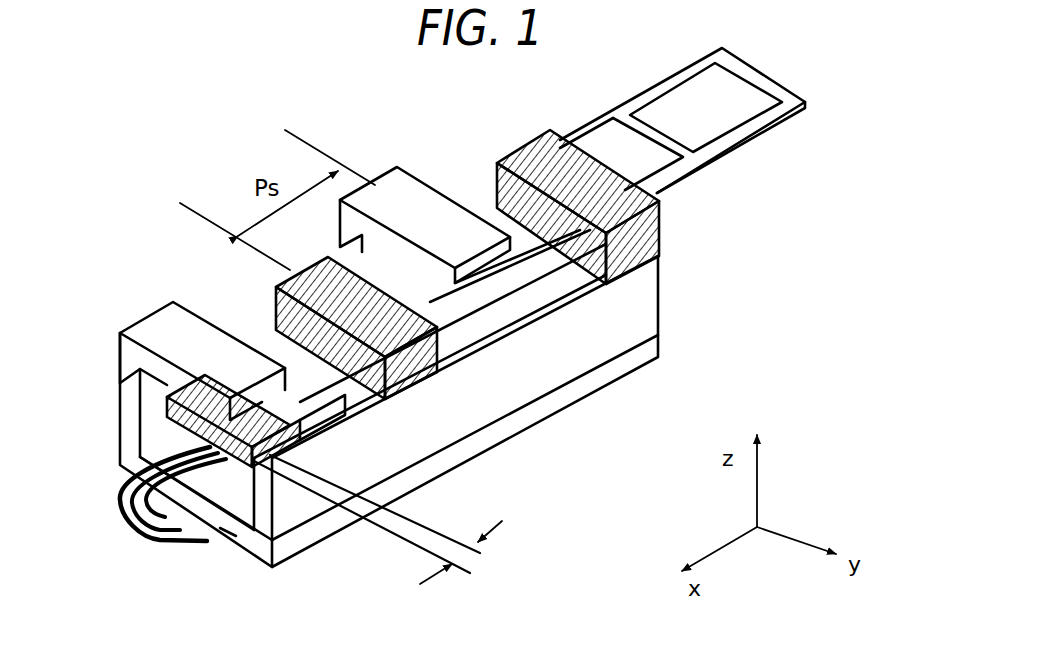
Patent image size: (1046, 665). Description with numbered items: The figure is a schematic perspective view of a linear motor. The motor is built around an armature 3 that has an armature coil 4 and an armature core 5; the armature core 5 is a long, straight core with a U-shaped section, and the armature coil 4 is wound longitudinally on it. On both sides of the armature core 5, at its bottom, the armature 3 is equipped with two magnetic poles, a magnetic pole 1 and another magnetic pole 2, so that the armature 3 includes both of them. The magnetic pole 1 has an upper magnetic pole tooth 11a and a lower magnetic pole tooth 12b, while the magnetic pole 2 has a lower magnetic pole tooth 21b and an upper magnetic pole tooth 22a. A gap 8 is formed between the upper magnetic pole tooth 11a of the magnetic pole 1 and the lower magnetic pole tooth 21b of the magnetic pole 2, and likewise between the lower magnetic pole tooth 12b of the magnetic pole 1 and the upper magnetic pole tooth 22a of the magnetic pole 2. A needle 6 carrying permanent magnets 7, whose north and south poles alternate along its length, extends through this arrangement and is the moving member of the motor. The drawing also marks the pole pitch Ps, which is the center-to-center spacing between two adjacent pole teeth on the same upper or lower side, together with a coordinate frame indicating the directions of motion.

The magnetic pole 1 is at (287, 302).
The upper magnetic pole tooth 11a is at (206, 360).
The lower magnetic pole tooth 12b is at (266, 336).
The magnetic pole 2 is at (263, 507).
The lower magnetic pole tooth 21b is at (283, 380).
The upper magnetic pole tooth 22a is at (440, 363).
The armature 3 is at (658, 317).
The armature coil 4 is at (160, 542).
The armature core 5 is at (222, 532).
The needle 6 is at (730, 153).
The permanent magnets 7 is at (673, 113).
The gap 8 is at (377, 521).